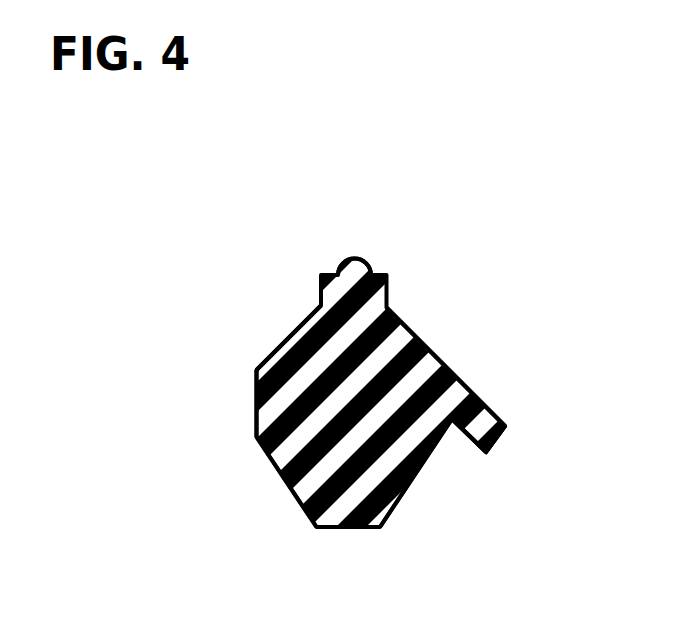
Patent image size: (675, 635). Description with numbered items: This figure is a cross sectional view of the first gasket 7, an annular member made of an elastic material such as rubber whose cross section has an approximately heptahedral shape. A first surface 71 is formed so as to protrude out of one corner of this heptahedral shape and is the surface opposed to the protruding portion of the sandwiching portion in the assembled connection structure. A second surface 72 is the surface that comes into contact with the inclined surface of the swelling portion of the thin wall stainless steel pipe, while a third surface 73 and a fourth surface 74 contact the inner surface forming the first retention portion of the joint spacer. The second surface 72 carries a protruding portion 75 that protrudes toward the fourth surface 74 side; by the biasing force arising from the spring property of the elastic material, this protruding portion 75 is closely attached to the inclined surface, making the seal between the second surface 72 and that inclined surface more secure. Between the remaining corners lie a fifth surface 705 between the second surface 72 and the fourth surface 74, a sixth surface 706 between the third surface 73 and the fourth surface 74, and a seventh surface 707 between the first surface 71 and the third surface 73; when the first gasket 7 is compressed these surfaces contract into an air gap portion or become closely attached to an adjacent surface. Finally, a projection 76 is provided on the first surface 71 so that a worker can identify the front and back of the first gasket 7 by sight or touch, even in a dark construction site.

The first gasket 7 is at (490, 282).
The first surface 71 is at (373, 271).
The second surface 72 is at (450, 371).
The third surface 73 is at (256, 406).
The fourth surface 74 is at (348, 527).
The protruding portion 75 is at (452, 429).
The projection 76 is at (338, 268).
The fifth surface 705 is at (418, 472).
The sixth surface 706 is at (295, 502).
The seventh surface 707 is at (303, 323).